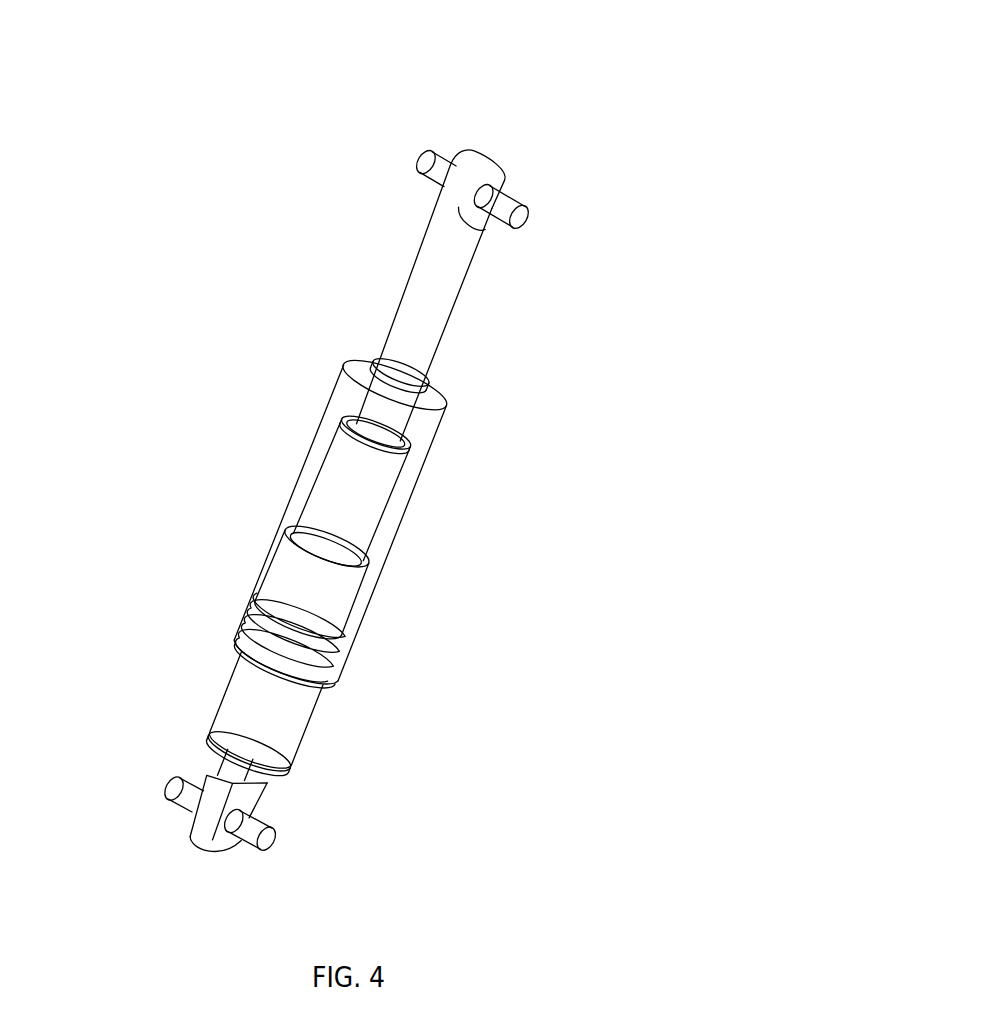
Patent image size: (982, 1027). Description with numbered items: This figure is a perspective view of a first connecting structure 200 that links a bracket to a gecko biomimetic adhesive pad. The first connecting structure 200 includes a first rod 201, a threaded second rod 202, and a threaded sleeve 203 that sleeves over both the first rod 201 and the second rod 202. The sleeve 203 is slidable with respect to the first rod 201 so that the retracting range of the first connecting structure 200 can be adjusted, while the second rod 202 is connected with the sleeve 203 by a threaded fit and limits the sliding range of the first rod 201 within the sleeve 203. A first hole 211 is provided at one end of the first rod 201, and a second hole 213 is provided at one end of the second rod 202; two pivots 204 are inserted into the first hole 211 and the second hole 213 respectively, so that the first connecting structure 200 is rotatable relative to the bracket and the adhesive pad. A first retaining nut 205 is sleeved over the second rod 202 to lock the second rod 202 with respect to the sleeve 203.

The first connecting structure 200 is at (335, 102).
The first rod 201 is at (413, 352).
The second rod 202 is at (268, 718).
The sleeve 203 is at (389, 519).
The pivot 204 is at (502, 205).
The first retaining nut 205 is at (268, 654).
The first hole 211 is at (456, 217).
The second hole 213 is at (247, 828).